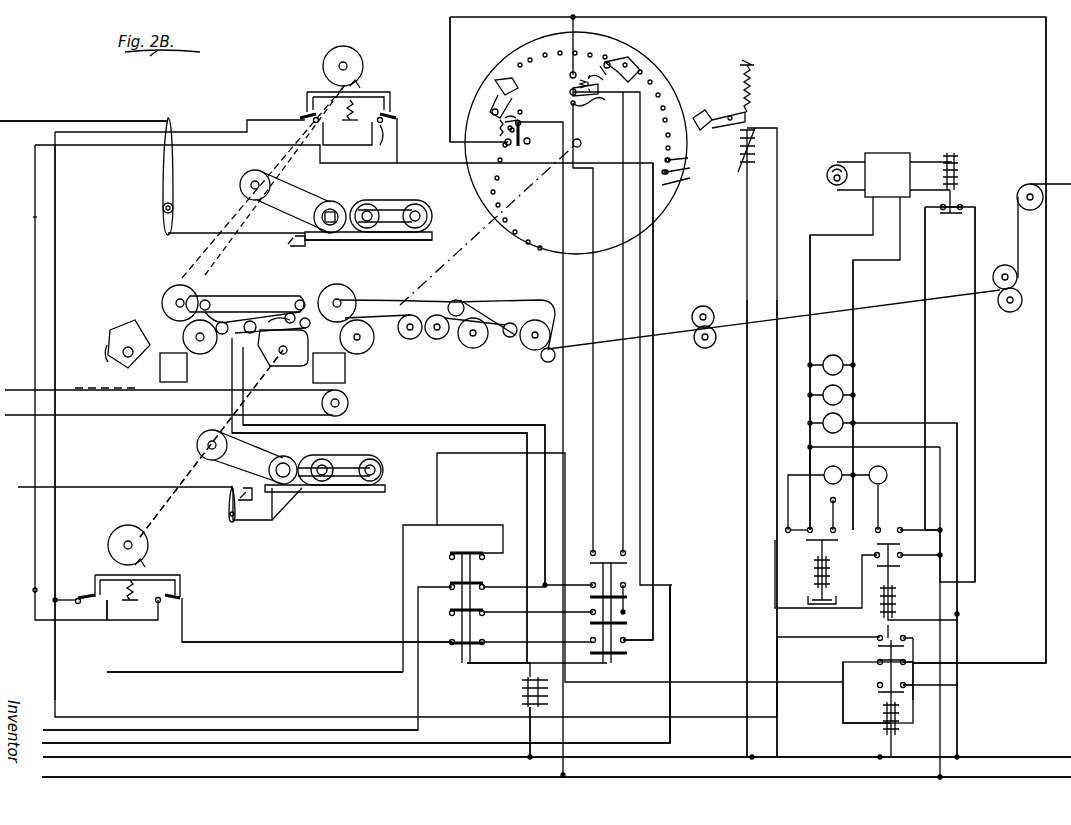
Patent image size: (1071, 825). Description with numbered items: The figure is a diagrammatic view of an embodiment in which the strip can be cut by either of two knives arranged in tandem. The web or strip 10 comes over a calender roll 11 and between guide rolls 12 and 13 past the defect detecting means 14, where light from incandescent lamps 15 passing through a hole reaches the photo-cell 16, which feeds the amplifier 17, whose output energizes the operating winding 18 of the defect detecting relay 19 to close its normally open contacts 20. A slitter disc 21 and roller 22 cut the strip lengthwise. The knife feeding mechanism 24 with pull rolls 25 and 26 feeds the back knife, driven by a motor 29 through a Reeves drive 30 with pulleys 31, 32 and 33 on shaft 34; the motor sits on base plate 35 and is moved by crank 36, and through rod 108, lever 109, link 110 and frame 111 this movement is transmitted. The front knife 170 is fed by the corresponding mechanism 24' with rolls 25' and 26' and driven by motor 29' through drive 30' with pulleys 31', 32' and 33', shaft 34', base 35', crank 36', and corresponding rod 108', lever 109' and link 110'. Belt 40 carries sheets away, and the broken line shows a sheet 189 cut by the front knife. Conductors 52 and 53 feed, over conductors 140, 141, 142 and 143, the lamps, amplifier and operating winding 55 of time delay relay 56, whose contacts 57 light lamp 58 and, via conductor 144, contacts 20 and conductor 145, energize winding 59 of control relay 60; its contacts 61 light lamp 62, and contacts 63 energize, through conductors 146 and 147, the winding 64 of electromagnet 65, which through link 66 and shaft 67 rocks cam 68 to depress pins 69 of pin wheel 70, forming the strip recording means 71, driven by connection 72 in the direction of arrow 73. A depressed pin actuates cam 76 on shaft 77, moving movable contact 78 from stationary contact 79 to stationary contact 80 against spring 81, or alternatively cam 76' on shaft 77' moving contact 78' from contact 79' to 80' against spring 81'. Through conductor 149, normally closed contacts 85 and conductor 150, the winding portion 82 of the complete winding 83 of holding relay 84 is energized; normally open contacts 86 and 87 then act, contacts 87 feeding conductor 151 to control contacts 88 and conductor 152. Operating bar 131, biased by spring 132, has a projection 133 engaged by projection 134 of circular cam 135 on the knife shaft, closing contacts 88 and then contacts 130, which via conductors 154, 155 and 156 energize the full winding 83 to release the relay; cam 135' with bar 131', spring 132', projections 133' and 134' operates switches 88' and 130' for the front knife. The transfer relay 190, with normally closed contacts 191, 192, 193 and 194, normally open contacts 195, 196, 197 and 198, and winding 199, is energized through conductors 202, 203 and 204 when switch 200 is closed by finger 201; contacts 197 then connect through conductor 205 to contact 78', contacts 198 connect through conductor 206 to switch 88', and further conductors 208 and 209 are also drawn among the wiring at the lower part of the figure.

The web or strip 10 is at (1015, 237).
The calender roll 11 is at (1027, 210).
The guide roll 12 is at (1003, 270).
The guide roll 13 is at (1018, 305).
The defect detecting means 14 is at (869, 137).
The incandescent lamp 15 is at (843, 362).
The photo-cell 16 is at (827, 175).
The amplifier 17 is at (868, 155).
The operating winding 18 is at (960, 170).
The defect detecting relay 19 is at (984, 176).
The normally open contacts 20 is at (965, 202).
The slitter disc 21 is at (705, 306).
The roller 22 is at (710, 345).
The knife feeding mechanism 24 is at (670, 332).
The knife feeding mechanism 24' is at (269, 265).
The pull or draw roll 25 is at (337, 293).
The pull or draw roll 25' is at (190, 292).
The pull or draw roll 26 is at (355, 351).
The pull or draw roll 26' is at (188, 351).
The motor 29 is at (284, 458).
The motor 29' is at (335, 201).
The Reeves variable speed drive 30 is at (343, 458).
The Reeves variable speed drive 30' is at (375, 204).
The pulley 31 is at (370, 492).
The pulley 31' is at (434, 213).
The pulley 32 is at (334, 456).
The pulley 32' is at (383, 198).
The pulley 33 is at (226, 452).
The pulley 33' is at (264, 201).
The shaft 34 is at (211, 443).
The shaft 34' is at (263, 181).
The base plate 35 is at (325, 506).
The base 35' is at (368, 250).
The manually operable crank 36 is at (245, 479).
The crank 36' is at (307, 248).
The belt 40 is at (15, 390).
The conductor 52 is at (706, 757).
The conductor 53 is at (700, 780).
The operating winding 55 is at (812, 564).
The time delay relay 56 is at (802, 594).
The normally open contacts 57 is at (822, 520).
The indicating lamp 58 is at (833, 466).
The operating winding 59 is at (898, 604).
The control relay 60 is at (866, 616).
The normally open contacts 61 is at (890, 530).
The indicating lamp 62 is at (887, 470).
The normally open contacts 63 is at (902, 556).
The operating winding 64 is at (738, 172).
The electromagnet 65 is at (769, 100).
The link 66 is at (742, 108).
The shaft 67 is at (714, 130).
The cam 68 is at (700, 110).
The pin 69 is at (689, 171).
The pin wheel 70 is at (620, 50).
The strip recording means 71 is at (610, 137).
The mechanical connection 72 is at (448, 272).
The arrow 73 is at (524, 33).
The cam 76 is at (489, 82).
The cam 76' is at (634, 58).
The shaft 77 is at (529, 106).
The shaft 77' is at (592, 63).
The movable contact 78 is at (532, 134).
The movable contact 78' is at (589, 133).
The stationary contact 79 is at (539, 150).
The stationary contact 79' is at (570, 86).
The stationary contact 80 is at (495, 152).
The stationary contact 80' is at (557, 71).
The spring 81 is at (506, 128).
The spring 81' is at (596, 111).
The portion of operating winding 82 is at (900, 733).
The operating winding 83 is at (900, 710).
The holding relay 84 is at (826, 732).
The normally closed contacts 85 is at (878, 666).
The normally open contacts 86 is at (892, 638).
The normally open contacts 87 is at (878, 688).
The control contacts 88 is at (136, 625).
The switch 88' is at (353, 139).
The rod 108 is at (125, 472).
The rod 108' is at (83, 107).
The lever 109 is at (214, 504).
The lever 109' is at (140, 176).
The link 110 is at (252, 519).
The link 110' is at (236, 218).
The frame 111 is at (288, 504).
The normally open contacts 130 is at (75, 607).
The switch 130' is at (284, 105).
The operating bar 131 is at (188, 581).
The operating bar 131' is at (408, 123).
The spring 132 is at (130, 600).
The spring 132' is at (349, 118).
The projection 133 is at (93, 564).
The projection 133' is at (275, 169).
The projection 134 is at (142, 567).
The projection 134' is at (359, 88).
The circular cam 135 is at (121, 538).
The cam 135' is at (350, 52).
The conductor 140 is at (962, 693).
The conductor 141 is at (942, 720).
The conductor 142 is at (855, 330).
The conductor 143 is at (812, 330).
The conductor 144 is at (928, 380).
The conductor 145 is at (980, 382).
The conductor 146 is at (779, 415).
The conductor 147 is at (750, 403).
The conductor 149 is at (1045, 640).
The conductor 150 is at (843, 668).
The conductor 151 is at (258, 642).
The conductor 152 is at (33, 217).
The conductor 154 is at (272, 672).
The conductor 155 is at (58, 246).
The conductor 156 is at (923, 676).
The front knife 170 is at (115, 340).
The sheet 189 is at (95, 385).
The transfer relay 190 is at (476, 688).
The normally closed contacts 191 is at (452, 560).
The normally closed contacts 192 is at (452, 590).
The normally closed contacts 193 is at (452, 617).
The normally closed contacts 194 is at (452, 646).
The normally open contacts 195 is at (592, 557).
The normally open contacts 196 is at (590, 583).
The normally open contacts 197 is at (592, 609).
The normally open contacts 198 is at (592, 639).
The operating winding 199 is at (522, 692).
The switch 200 is at (278, 342).
The finger 201 is at (252, 292).
The conductor 202 is at (520, 730).
The conductor 203 is at (520, 480).
The conductor 204 is at (548, 496).
The conductor 205 is at (654, 393).
The conductor 206 is at (654, 435).
The lead 208 is at (78, 730).
The lead 209 is at (152, 743).